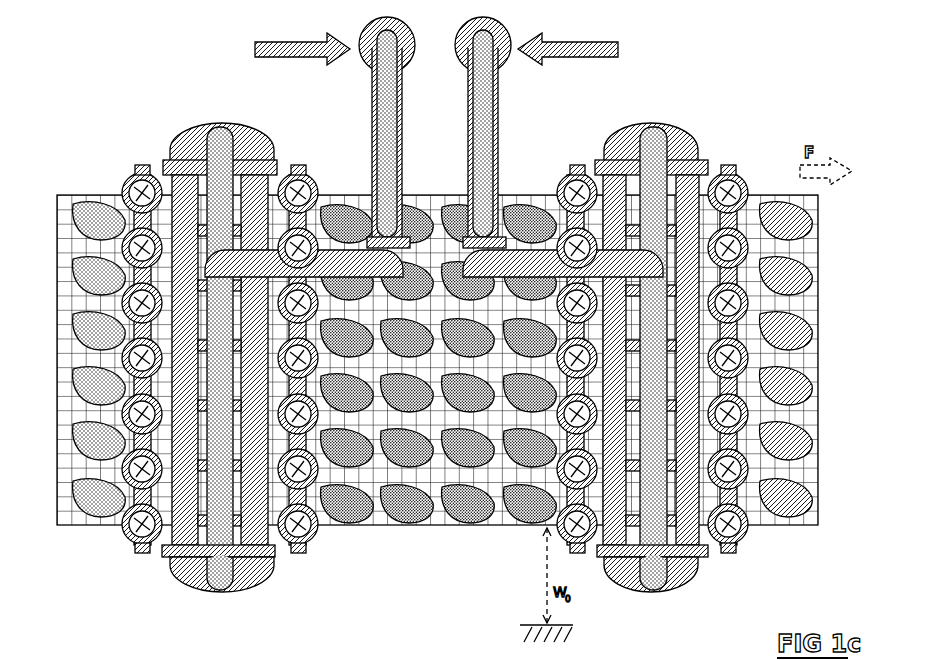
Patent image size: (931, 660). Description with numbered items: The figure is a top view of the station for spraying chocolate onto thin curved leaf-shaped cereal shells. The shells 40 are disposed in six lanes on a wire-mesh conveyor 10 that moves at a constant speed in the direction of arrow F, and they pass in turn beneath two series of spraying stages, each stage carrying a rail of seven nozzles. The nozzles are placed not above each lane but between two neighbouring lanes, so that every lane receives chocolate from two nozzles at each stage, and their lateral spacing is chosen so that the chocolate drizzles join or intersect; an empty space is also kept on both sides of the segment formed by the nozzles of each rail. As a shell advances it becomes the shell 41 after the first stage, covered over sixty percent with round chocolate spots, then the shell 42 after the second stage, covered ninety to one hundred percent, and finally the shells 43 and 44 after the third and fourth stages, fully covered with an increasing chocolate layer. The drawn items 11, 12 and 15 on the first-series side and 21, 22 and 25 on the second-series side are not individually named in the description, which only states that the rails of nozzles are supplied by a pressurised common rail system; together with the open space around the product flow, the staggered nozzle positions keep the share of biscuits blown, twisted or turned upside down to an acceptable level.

The wire-mesh conveyor 10 is at (390, 526).
The first pulling force direction 11 is at (268, 58).
The first upright pin 12 is at (400, 136).
The first clamping bar 15 is at (270, 158).
The second pulling force direction 21 is at (606, 58).
The second upright pin 22 is at (499, 133).
The second clamping bar 25 is at (690, 165).
The shell 40 is at (93, 510).
The shell after first spraying stage 41 is at (242, 568).
The shell after second spraying stage 42 is at (350, 517).
The shell after third spraying stage 43 is at (680, 566).
The shell after fourth spraying stage 44 is at (795, 520).